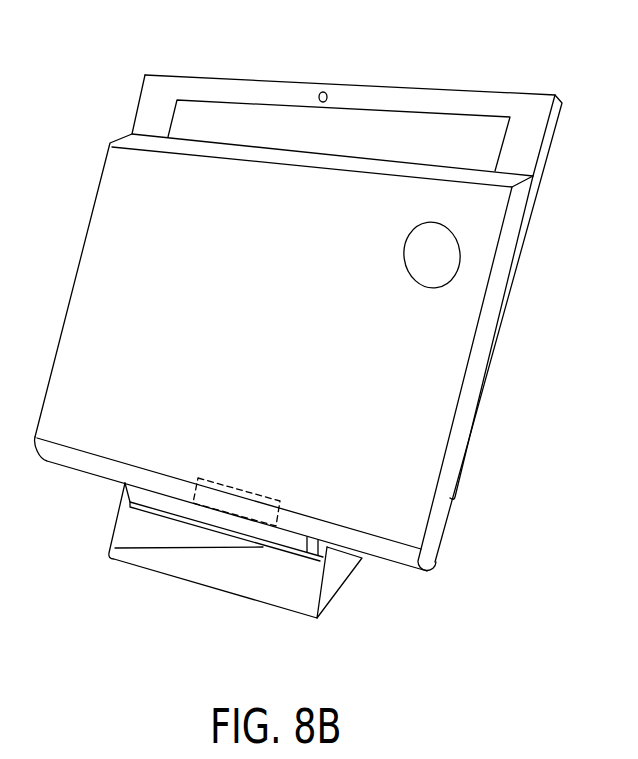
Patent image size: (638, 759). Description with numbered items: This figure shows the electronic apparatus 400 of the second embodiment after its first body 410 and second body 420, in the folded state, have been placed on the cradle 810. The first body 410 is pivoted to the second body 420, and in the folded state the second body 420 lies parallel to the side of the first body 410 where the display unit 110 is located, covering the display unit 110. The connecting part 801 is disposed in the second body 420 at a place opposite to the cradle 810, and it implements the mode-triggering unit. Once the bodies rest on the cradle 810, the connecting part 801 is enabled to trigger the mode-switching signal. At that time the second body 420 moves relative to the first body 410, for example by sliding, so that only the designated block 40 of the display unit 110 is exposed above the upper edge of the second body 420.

The designated block 40 is at (250, 125).
The display unit 110 is at (417, 110).
The electronic apparatus 400 is at (332, 336).
The first body 410 is at (552, 149).
The second body 420 is at (432, 398).
The connecting part 801 is at (195, 503).
The cradle 810 is at (333, 580).